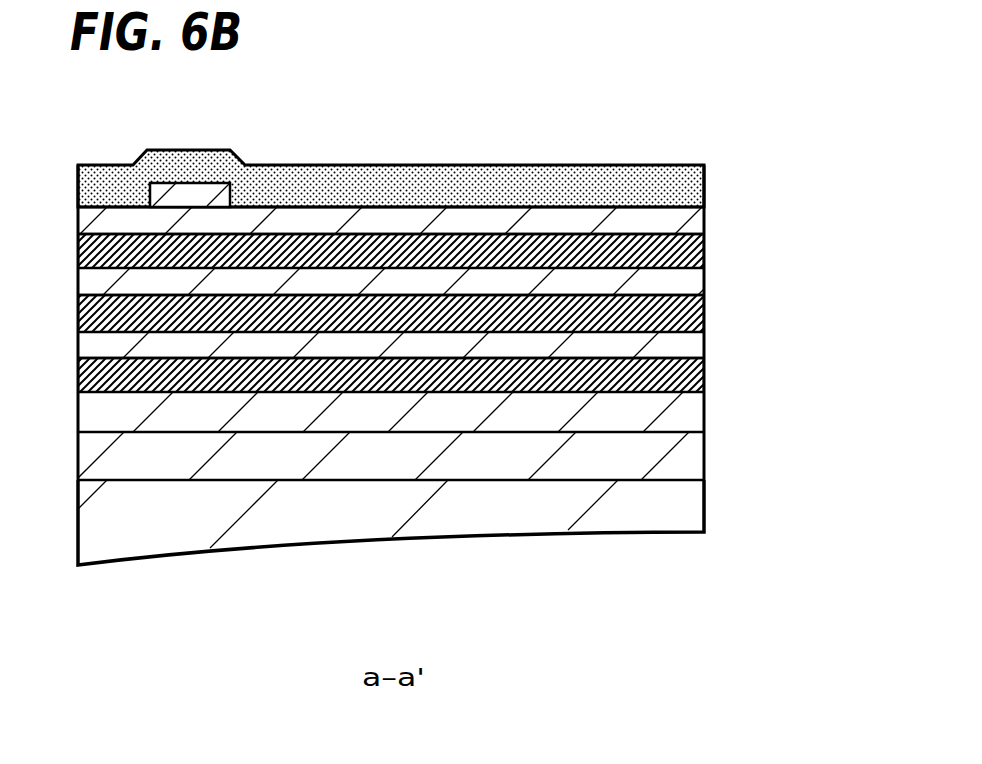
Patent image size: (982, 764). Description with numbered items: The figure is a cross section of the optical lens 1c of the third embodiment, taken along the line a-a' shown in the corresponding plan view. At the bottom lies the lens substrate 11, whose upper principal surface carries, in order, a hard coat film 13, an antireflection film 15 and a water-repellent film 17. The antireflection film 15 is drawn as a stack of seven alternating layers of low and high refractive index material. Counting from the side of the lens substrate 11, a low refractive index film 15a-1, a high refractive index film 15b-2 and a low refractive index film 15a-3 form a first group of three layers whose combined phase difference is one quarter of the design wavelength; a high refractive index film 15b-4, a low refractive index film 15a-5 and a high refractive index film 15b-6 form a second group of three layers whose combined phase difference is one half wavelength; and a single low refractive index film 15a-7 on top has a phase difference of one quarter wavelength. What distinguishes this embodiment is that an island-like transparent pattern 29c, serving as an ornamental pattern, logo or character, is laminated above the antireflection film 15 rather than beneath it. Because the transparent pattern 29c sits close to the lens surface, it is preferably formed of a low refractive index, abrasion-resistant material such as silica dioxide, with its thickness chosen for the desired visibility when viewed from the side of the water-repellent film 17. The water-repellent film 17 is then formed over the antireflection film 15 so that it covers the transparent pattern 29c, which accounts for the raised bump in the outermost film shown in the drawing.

The optical lens 1c is at (452, 118).
The water-repellent film 17 is at (593, 190).
The transparent pattern 29c is at (177, 192).
The antireflection film 15 is at (418, 318).
The low refractive index film 15a-7 is at (693, 221).
The high refractive index film 15b-6 is at (693, 251).
The low refractive index film 15a-5 is at (693, 283).
The high refractive index film 15b-4 is at (693, 318).
The low refractive index film 15a-3 is at (693, 348).
The high refractive index film 15b-2 is at (693, 383).
The low refractive index film 15a-1 is at (693, 413).
The hard coat film 13 is at (690, 462).
The lens substrate 11 is at (478, 517).